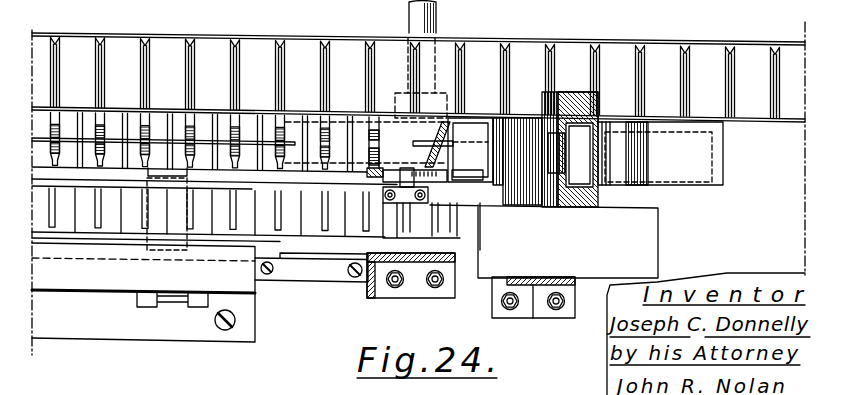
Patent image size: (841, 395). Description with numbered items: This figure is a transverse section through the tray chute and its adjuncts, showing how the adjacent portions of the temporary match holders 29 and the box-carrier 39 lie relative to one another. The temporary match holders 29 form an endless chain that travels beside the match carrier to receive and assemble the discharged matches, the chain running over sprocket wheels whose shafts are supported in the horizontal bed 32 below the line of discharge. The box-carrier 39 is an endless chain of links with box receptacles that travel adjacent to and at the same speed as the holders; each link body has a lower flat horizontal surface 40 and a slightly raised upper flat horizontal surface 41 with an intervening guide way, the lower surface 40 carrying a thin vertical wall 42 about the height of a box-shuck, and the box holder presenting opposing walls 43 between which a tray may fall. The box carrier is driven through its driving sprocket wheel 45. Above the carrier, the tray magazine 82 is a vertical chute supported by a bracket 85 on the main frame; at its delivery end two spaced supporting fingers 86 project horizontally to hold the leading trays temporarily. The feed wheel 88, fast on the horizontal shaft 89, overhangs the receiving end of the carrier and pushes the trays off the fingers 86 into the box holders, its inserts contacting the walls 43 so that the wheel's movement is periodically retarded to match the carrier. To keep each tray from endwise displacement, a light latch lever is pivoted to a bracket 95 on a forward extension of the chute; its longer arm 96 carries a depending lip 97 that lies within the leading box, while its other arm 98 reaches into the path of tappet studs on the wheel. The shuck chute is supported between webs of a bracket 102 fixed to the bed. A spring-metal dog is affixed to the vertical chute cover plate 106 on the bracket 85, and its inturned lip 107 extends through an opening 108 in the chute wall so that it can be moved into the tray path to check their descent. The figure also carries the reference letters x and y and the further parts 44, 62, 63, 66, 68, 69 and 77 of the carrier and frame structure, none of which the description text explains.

The temporary match holders 29 is at (705, 60).
The horizontal bed 32 is at (772, 148).
The box-carrier 39 is at (245, 128).
The lower flat horizontal surface 40 is at (358, 235).
The upper flat horizontal surface 41 is at (308, 120).
The vertical wall 42 is at (172, 228).
The walls of the box holder 43 is at (53, 117).
The lower needle 44 is at (93, 165).
The driving sprocket wheel 45 is at (418, 24).
The slide bar 62 is at (310, 182).
The pawl 63 is at (305, 297).
The bracket 66 is at (226, 183).
The housing 68 is at (65, 265).
The plate 69 is at (133, 250).
The lug 77 is at (197, 240).
The tray magazine 82 is at (590, 180).
The bracket 85 is at (660, 153).
The supporting fingers 86 is at (455, 137).
The feed wheel 88 is at (513, 125).
The horizontal shaft 89 is at (437, 13).
The bracket 95 is at (431, 211).
The longer arm of latch lever 96 is at (475, 177).
The depending lip 97 is at (503, 183).
The other arm of latch lever 98 is at (311, 270).
The bracket 102 is at (408, 292).
The vertical chute cover plate 106 is at (560, 207).
The inturned lip 107 is at (597, 116).
The opening 108 is at (566, 142).
The phantom part x is at (165, 250).
The reference point y is at (157, 112).